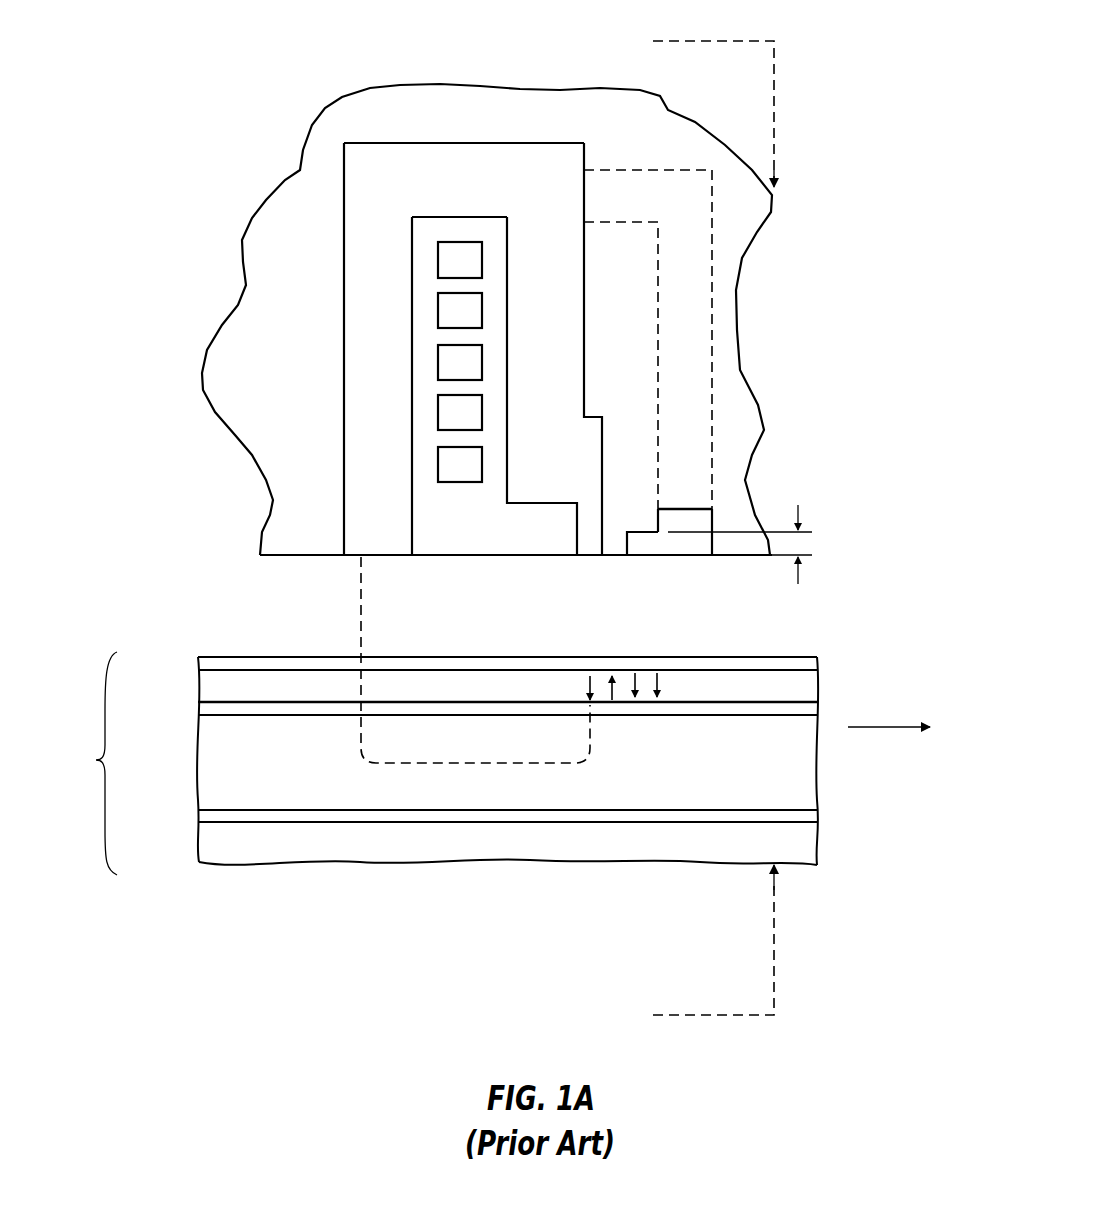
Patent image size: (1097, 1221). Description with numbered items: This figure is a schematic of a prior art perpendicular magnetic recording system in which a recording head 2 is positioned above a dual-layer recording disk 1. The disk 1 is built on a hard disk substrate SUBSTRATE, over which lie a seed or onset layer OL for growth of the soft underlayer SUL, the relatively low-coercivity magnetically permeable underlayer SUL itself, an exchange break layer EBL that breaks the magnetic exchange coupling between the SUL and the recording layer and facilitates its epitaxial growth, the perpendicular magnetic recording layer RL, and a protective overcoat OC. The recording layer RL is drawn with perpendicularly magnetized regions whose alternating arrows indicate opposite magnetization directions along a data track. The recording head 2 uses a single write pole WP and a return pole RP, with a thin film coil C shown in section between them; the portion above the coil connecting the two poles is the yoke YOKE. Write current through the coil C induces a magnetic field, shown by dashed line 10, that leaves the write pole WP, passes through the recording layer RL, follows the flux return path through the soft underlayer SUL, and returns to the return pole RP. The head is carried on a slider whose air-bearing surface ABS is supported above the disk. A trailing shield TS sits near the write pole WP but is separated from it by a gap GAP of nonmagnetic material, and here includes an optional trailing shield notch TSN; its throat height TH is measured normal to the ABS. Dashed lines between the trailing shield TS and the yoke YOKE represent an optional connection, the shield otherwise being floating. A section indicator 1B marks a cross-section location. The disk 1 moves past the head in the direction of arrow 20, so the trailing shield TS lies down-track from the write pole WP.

The recording head 2 is at (372, 106).
The yoke YOKE is at (517, 173).
The return pole RP is at (398, 345).
The write pole WP is at (576, 310).
The thin film coil C is at (457, 253).
The gap GAP is at (611, 544).
The trailing shield TS is at (683, 538).
The trailing shield notch TSN is at (640, 547).
The throat height TH is at (740, 527).
The air-bearing surface ABS is at (284, 556).
The section line 1B is at (692, 529).
The recording disk 1 is at (454, 763).
The protective overcoat OC is at (208, 664).
The recording layer RL is at (698, 690).
The exchange break layer EBL is at (208, 712).
The soft underlayer SUL is at (761, 762).
The onset layer OL is at (208, 816).
The hard disk substrate SUBSTRATE is at (508, 846).
The magnetic field 10 is at (401, 768).
The arrow indicating disk motion direction 20 is at (901, 731).